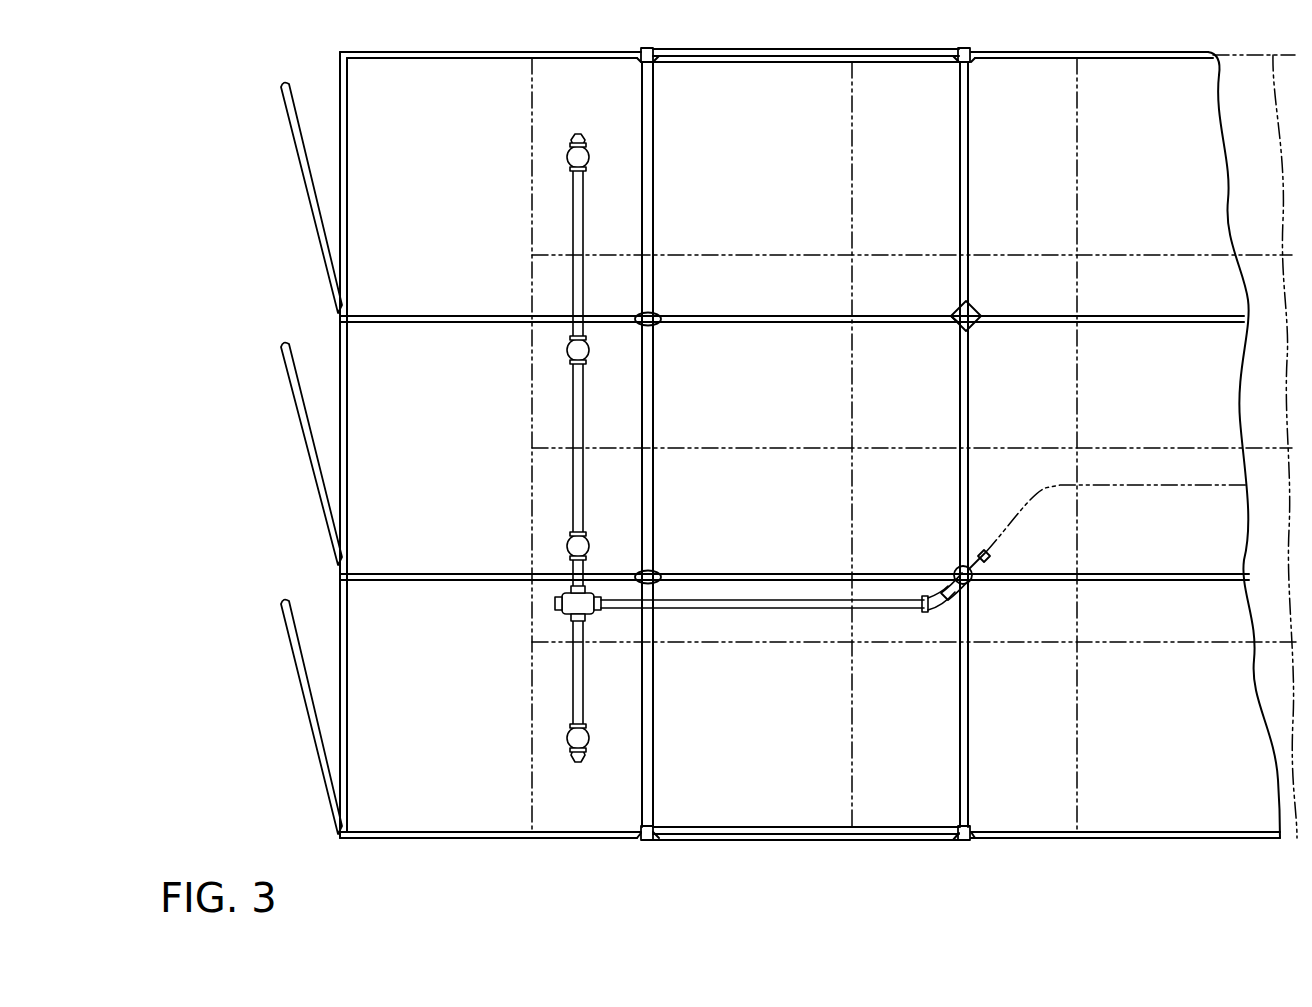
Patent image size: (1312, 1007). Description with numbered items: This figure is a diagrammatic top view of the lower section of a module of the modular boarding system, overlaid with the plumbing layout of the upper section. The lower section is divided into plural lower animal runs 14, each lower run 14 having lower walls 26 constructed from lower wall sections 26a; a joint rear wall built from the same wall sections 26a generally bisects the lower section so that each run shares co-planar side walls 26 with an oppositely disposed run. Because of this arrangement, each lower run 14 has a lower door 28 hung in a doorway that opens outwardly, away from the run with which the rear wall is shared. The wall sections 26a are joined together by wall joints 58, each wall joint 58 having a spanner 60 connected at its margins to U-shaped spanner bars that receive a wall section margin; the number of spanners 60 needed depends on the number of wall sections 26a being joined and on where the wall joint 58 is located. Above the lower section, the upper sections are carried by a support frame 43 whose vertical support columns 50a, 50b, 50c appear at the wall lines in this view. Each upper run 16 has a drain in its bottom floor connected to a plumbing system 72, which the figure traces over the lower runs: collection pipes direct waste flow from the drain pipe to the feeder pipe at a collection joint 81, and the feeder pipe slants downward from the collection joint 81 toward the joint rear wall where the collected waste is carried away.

The lower animal run 14 is at (336, 81).
The upper run 16 is at (528, 256).
The lower wall 26 is at (445, 843).
The lower wall section 26a is at (780, 62).
The lower door 28 is at (305, 180).
The support frame 43 is at (793, 825).
The vertical support column 50a is at (652, 63).
The vertical support column 50b is at (655, 314).
The vertical support column 50c is at (972, 60).
The wall joint 58 is at (983, 302).
The spanner 60 is at (955, 320).
The plumbing system 72 is at (561, 490).
The collection joint 81 is at (569, 613).